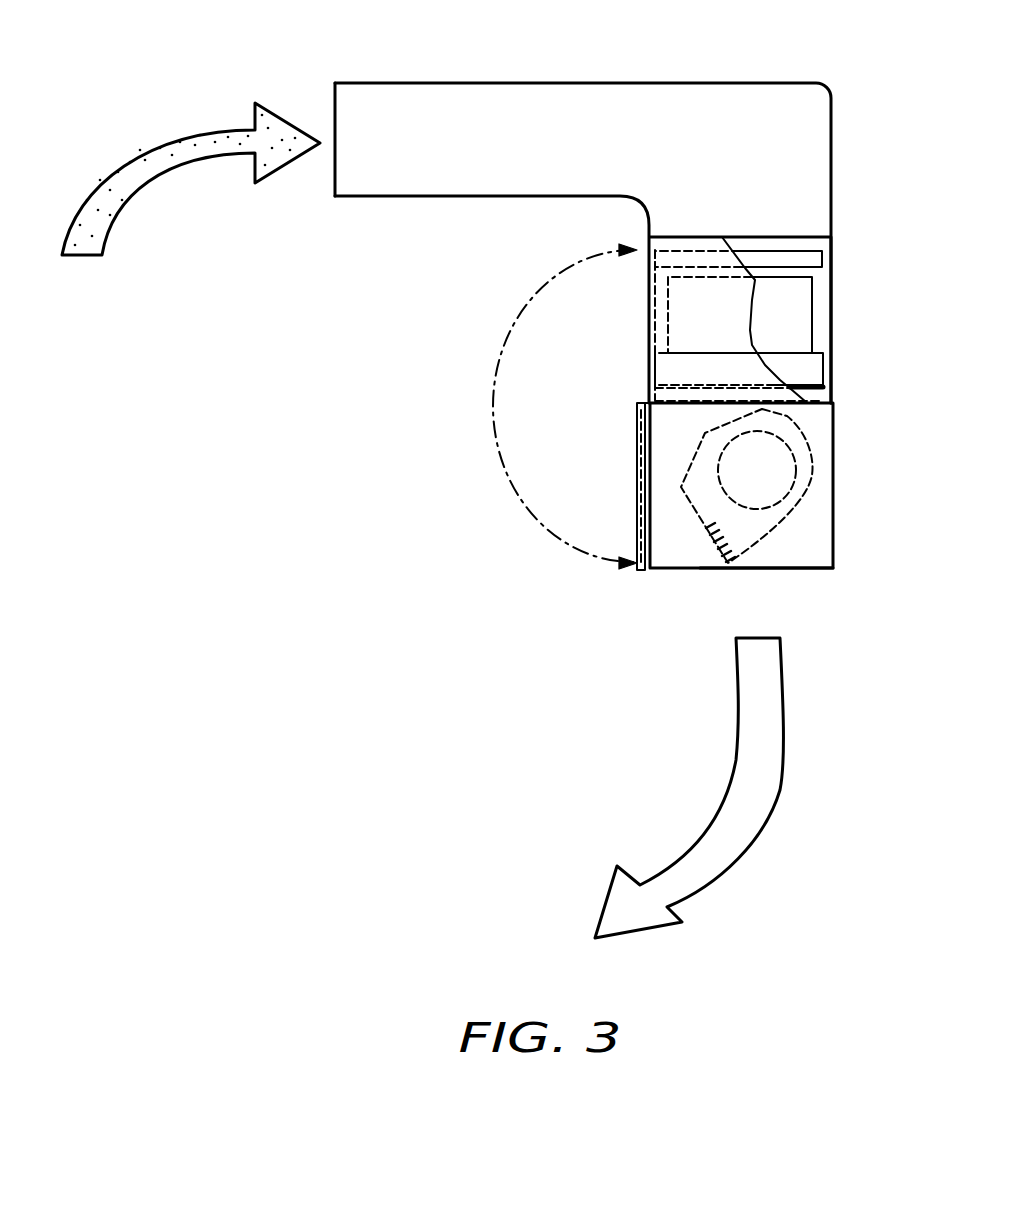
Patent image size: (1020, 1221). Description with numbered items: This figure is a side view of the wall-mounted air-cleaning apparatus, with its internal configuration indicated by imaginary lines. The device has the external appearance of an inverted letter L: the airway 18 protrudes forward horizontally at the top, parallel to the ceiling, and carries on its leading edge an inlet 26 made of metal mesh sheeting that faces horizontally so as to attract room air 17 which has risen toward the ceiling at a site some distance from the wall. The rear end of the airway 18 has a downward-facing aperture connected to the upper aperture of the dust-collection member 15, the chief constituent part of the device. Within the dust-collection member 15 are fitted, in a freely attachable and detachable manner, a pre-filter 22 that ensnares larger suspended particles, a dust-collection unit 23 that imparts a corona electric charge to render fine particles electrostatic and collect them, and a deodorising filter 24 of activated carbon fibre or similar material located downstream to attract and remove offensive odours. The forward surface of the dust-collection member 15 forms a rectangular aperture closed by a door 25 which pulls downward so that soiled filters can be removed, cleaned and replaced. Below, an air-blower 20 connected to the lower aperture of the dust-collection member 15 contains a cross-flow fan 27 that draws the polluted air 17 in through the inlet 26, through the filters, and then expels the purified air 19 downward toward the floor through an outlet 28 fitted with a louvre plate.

The dust-collection member 15 is at (842, 313).
The room air 17 is at (130, 168).
The airway 18 is at (473, 95).
The purified air 19 is at (745, 812).
The air-blower 20 is at (820, 548).
The pre-filter 22 is at (770, 255).
The dust-collection unit 23 is at (800, 298).
The deodorising filter 24 is at (815, 392).
The door 25 is at (638, 463).
The inlet 26 is at (332, 178).
The cross-flow fan 27 is at (780, 475).
The outlet 28 is at (790, 570).